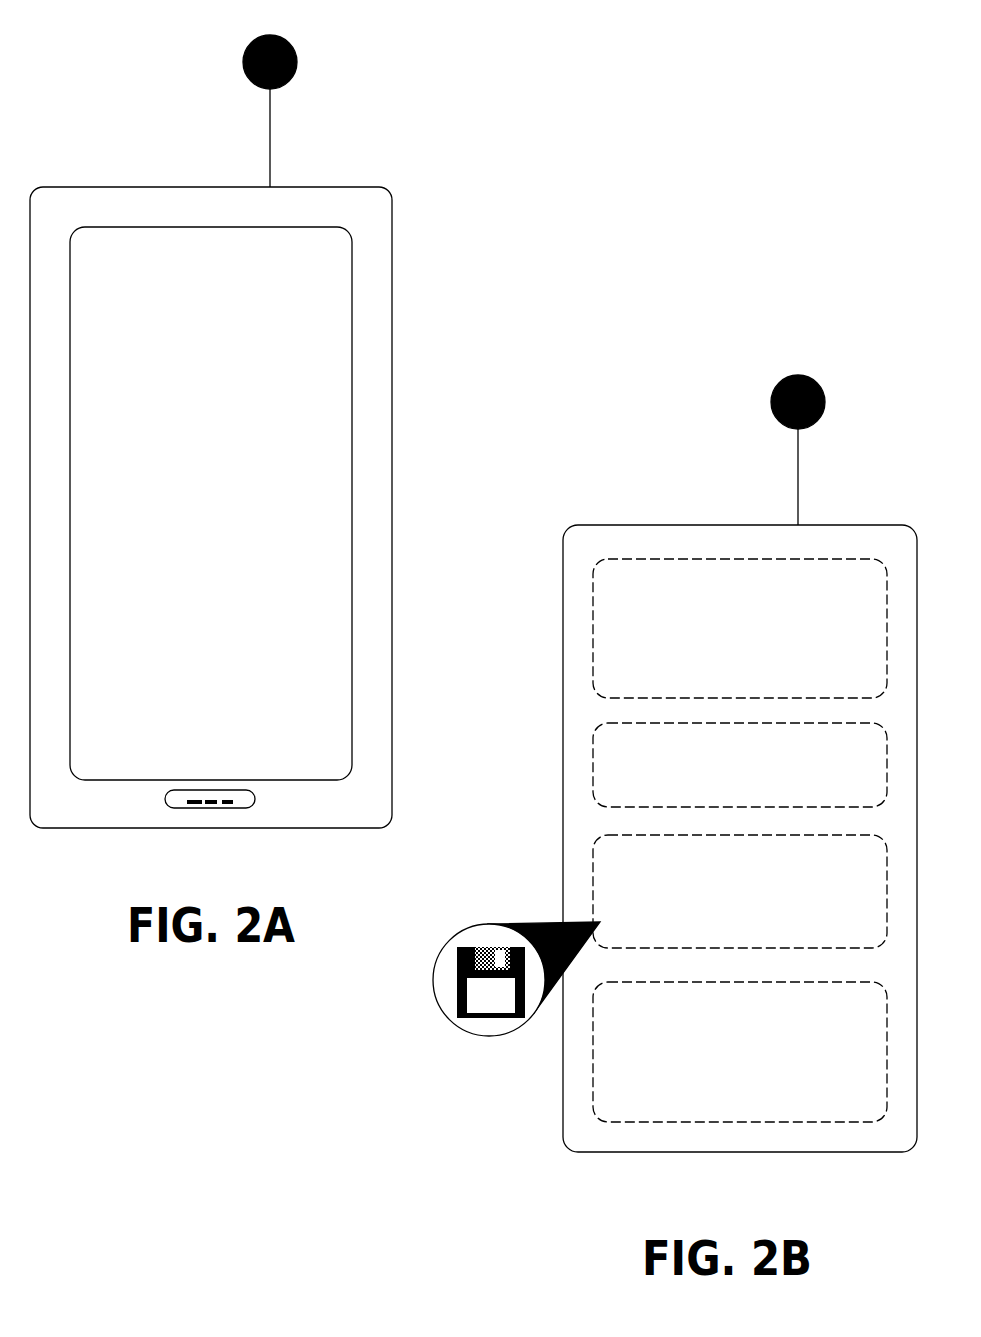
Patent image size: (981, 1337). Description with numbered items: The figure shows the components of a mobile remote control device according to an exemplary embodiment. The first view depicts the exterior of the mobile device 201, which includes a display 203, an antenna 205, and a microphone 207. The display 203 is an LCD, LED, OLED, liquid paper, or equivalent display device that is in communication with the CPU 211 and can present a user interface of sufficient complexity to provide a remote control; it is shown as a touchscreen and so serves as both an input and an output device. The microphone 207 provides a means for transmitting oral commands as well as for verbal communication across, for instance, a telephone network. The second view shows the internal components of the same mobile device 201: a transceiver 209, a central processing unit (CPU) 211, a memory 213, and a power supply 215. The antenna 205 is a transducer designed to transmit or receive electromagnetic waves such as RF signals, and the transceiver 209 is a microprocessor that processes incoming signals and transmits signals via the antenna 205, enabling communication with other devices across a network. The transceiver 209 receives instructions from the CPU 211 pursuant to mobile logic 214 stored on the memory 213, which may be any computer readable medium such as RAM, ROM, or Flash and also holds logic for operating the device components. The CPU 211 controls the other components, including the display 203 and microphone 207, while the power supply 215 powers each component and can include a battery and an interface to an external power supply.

In FIG. 2A, the mobile device 201 is at (272, 492).
In FIG. 2A, the display 203 is at (292, 503).
In FIG. 2A, the antenna 205 is at (351, 103).
In FIG. 2A, the microphone 207 is at (279, 840).
In FIG. 2B, the transceiver 209 is at (669, 619).
In FIG. 2B, the central processing unit (CPU) 211 is at (669, 758).
In FIG. 2B, the memory 213 is at (669, 887).
In FIG. 2B, the mobile logic 214 is at (480, 986).
In FIG. 2B, the power supply 215 is at (669, 1060).